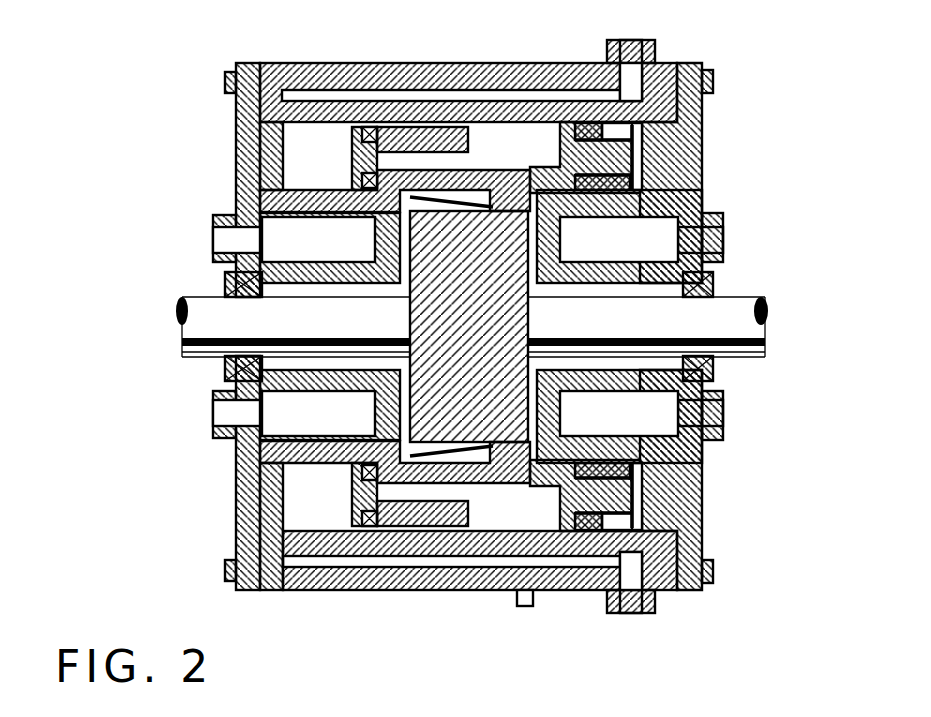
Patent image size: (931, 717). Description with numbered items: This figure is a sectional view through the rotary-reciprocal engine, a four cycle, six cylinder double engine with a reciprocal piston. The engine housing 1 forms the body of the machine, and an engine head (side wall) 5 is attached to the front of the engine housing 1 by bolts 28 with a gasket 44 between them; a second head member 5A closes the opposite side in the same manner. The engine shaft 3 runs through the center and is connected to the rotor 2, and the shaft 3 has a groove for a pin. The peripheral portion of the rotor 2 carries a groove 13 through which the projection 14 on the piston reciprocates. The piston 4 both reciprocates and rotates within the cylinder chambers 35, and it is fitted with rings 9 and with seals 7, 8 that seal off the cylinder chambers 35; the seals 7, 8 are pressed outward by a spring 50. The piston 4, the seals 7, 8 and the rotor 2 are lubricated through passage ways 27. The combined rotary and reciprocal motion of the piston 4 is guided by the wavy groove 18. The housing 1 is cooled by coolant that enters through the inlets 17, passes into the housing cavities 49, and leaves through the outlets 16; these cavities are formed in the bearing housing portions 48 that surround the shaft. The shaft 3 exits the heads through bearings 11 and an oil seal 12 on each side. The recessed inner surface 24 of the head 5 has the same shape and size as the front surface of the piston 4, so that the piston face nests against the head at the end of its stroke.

The engine housing 1 is at (400, 83).
The rotor 2 is at (700, 463).
The engine shaft 3 is at (215, 322).
The piston 4 is at (372, 155).
The engine head (side wall) 5 is at (712, 80).
The nut 5A is at (263, 590).
The seal 7 is at (680, 120).
The seal 8 is at (650, 143).
The rings 9 is at (362, 130).
The bearings 11 is at (233, 282).
The oil seal 12 is at (228, 383).
The groove 13 is at (410, 200).
The projection 14 is at (263, 183).
The outlets 16 is at (217, 225).
The inlets 17 is at (650, 63).
The wavy groove 18 is at (503, 150).
The recessed inner surface 24 is at (240, 100).
The passage ways 27 is at (528, 600).
The bolts 28 is at (228, 588).
The cylinder chambers 35 is at (303, 167).
The gasket 44 is at (680, 63).
The bearing housing 48 is at (262, 160).
The housing cavities 49 is at (595, 97).
The spring 50 is at (677, 590).